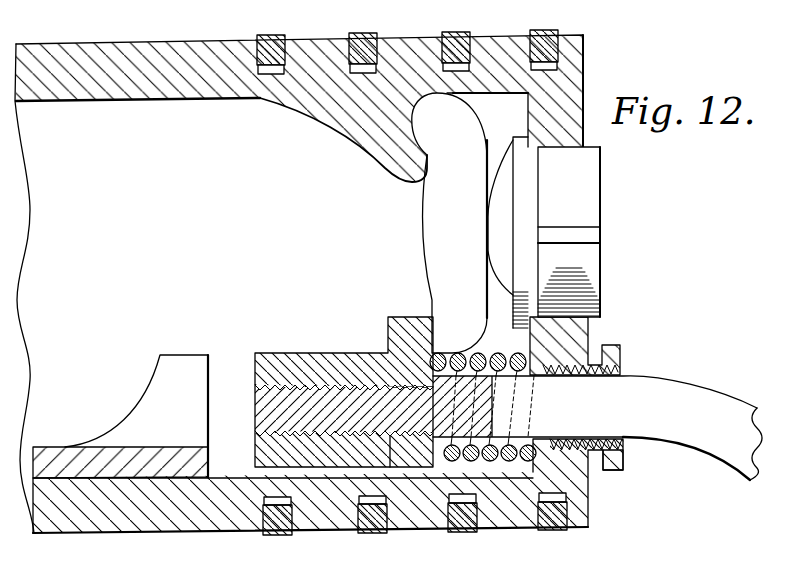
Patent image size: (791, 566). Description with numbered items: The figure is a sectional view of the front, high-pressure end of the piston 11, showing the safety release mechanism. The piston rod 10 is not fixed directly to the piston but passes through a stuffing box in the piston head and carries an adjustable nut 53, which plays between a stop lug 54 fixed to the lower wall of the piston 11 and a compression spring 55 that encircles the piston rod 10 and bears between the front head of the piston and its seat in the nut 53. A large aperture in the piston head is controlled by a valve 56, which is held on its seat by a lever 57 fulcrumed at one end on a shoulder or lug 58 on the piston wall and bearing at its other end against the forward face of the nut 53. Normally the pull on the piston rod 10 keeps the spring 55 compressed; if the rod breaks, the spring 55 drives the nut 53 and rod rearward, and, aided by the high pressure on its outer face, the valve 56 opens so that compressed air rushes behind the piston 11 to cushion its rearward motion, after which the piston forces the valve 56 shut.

The piston rod 10 is at (697, 389).
The piston 11 is at (319, 282).
The adjustable nut 53 is at (322, 367).
The stop lug 54 is at (120, 416).
The compression spring 55 is at (532, 462).
The valve 56 is at (569, 232).
The lever 57 is at (436, 259).
The shoulder or lug 58 is at (385, 160).